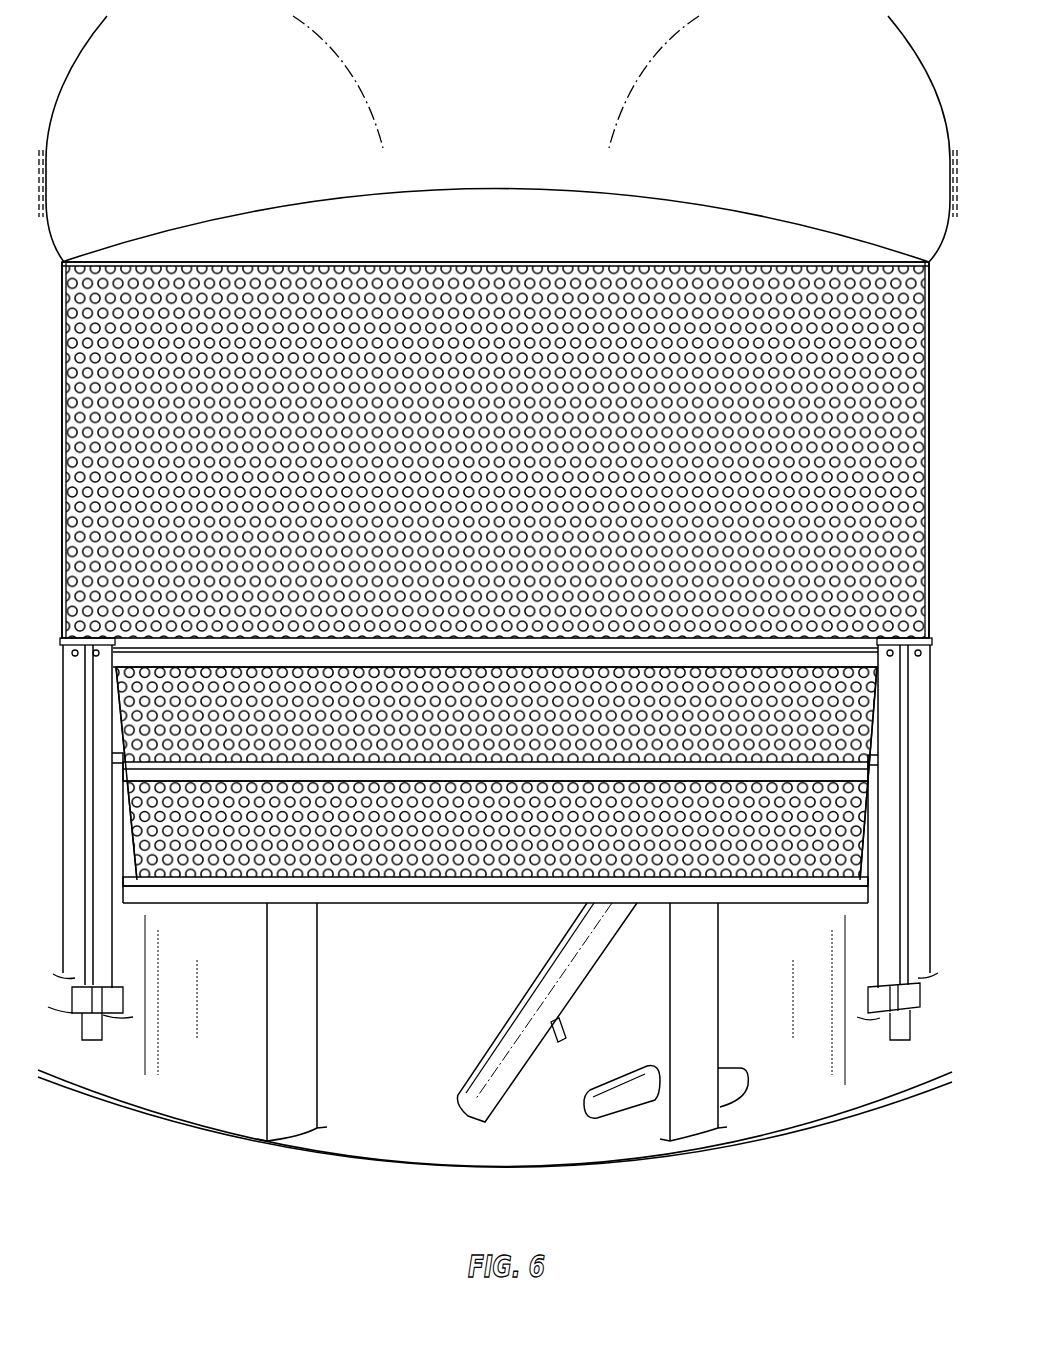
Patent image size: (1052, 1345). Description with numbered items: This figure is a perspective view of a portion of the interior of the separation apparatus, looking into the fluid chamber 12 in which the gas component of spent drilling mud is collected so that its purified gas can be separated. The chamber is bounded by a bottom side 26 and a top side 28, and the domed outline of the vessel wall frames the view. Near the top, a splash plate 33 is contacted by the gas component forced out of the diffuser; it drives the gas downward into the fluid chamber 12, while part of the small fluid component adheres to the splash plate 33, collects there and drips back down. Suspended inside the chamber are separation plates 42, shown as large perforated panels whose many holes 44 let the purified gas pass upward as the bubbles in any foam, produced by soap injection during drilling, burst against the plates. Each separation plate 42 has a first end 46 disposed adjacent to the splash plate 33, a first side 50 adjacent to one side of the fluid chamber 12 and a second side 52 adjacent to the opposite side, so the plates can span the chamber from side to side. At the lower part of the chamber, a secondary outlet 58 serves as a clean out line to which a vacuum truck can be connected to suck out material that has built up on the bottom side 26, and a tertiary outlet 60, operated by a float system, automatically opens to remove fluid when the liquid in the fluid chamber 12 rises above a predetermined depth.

The fluid chamber 12 is at (881, 58).
The bottom side 26 is at (417, 1016).
The top side 28 is at (505, 146).
The splash plate 33 is at (638, 208).
The separation plate 42 is at (173, 290).
The holes 44 is at (896, 273).
The first end 46 is at (298, 263).
The first side 50 is at (925, 395).
The second side 52 is at (63, 337).
The secondary outlet 58 is at (518, 1023).
The tertiary outlet 60 is at (625, 1097).